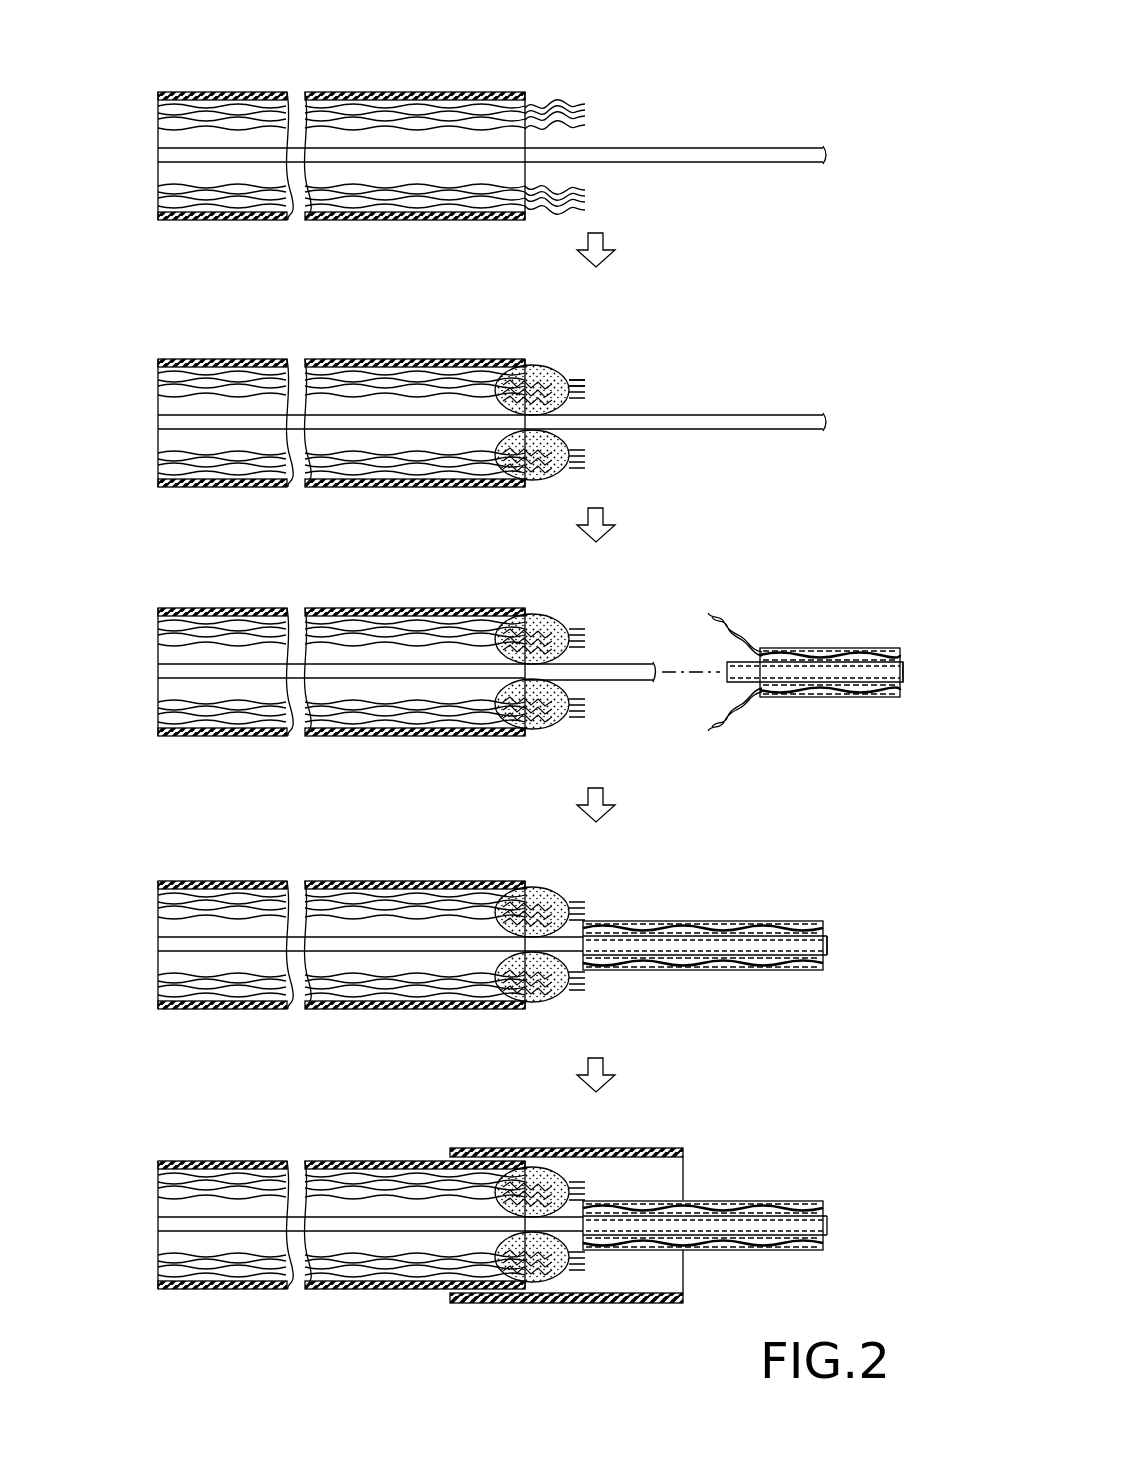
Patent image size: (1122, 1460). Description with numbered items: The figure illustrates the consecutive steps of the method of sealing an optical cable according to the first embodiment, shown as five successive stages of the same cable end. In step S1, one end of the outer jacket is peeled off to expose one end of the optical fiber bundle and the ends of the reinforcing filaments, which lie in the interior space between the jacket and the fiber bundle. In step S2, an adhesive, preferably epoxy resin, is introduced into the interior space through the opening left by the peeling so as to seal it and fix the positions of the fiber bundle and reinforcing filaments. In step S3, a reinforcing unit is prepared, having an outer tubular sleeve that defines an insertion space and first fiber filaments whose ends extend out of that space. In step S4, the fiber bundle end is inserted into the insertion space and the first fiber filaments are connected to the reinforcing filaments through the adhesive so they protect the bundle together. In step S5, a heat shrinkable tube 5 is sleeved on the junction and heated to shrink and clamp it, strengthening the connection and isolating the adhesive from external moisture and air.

The step S1 is at (160, 80).
The step S2 is at (160, 347).
The step S3 is at (160, 596).
The step S4 is at (160, 869).
The step S5 is at (160, 1149).
The heat shrinkable tube 5 is at (557, 1303).